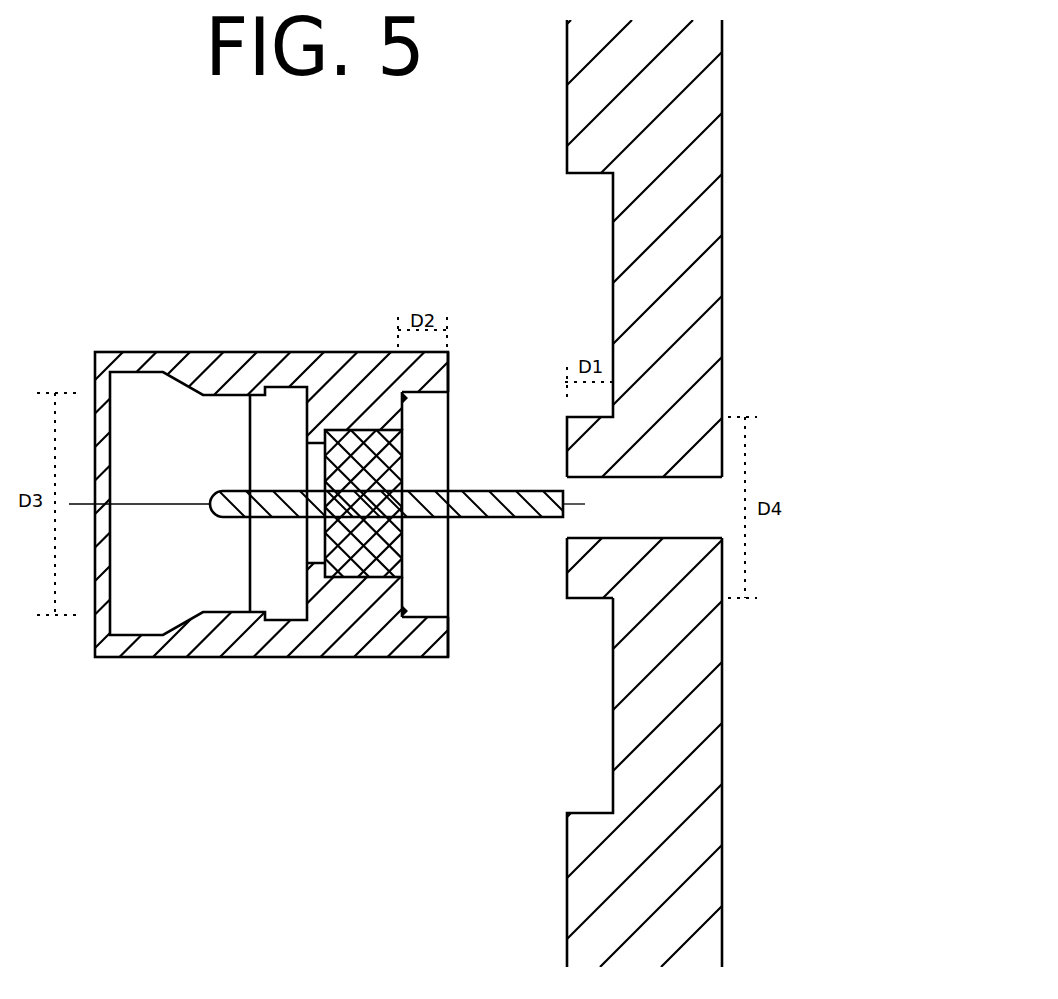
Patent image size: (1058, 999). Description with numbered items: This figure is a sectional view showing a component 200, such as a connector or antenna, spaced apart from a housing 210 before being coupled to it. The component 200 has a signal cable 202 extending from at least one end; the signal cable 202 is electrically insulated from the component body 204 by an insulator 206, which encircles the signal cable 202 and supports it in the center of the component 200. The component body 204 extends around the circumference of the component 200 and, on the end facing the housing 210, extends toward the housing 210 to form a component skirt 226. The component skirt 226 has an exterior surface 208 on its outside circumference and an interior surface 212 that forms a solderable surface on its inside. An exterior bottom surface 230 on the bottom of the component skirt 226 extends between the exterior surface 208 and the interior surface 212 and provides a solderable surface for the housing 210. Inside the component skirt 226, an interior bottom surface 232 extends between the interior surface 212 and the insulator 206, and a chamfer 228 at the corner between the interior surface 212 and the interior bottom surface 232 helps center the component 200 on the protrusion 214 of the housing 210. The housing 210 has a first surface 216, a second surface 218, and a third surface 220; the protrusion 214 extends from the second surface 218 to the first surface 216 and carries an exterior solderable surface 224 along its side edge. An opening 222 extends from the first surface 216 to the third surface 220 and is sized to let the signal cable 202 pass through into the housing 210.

The component 200 is at (185, 308).
The signal cable 202 is at (399, 503).
The component body 204 is at (230, 630).
The insulator 206 is at (325, 430).
The exterior surface 208 is at (422, 662).
The housing 210 is at (641, 97).
The interior surface 212 is at (431, 614).
The protrusion 214 is at (580, 570).
The first surface 216 is at (565, 461).
The second surface 218 is at (614, 723).
The third surface 220 is at (723, 277).
The opening 222 is at (623, 499).
The exterior solderable surface 224 is at (600, 601).
The component skirt 226 is at (439, 629).
The chamfer 228 is at (407, 607).
The exterior bottom surface 230 is at (453, 643).
The interior bottom surface 232 is at (404, 416).